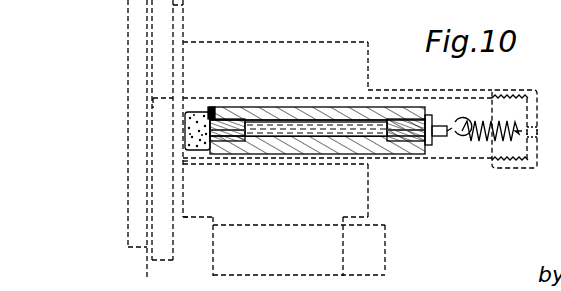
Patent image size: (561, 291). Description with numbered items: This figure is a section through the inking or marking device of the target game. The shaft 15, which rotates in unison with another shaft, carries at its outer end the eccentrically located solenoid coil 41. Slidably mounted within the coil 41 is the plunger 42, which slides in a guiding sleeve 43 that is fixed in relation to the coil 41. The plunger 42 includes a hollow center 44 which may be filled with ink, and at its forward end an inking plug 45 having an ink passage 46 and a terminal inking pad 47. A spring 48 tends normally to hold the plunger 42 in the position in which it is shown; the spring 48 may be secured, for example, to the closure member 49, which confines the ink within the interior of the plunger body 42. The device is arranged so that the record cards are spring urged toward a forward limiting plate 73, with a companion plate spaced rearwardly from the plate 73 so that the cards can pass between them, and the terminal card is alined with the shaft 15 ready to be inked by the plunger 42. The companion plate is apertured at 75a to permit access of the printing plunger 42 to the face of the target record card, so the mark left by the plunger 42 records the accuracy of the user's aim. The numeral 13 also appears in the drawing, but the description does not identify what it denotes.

The frame member 13 is at (147, 267).
The shaft 15 is at (385, 263).
The solenoid coil 41 is at (238, 42).
The plunger 42 is at (378, 107).
The guiding sleeve 43 is at (446, 166).
The hollow center 44 is at (330, 142).
The inking plug 45 is at (198, 107).
The ink passage 46 is at (222, 133).
The inking pad 47 is at (185, 131).
The spring 48 is at (490, 143).
The closure member 49 is at (410, 148).
The forward limiting plate 73 is at (127, 35).
The aperture 75a is at (150, 108).